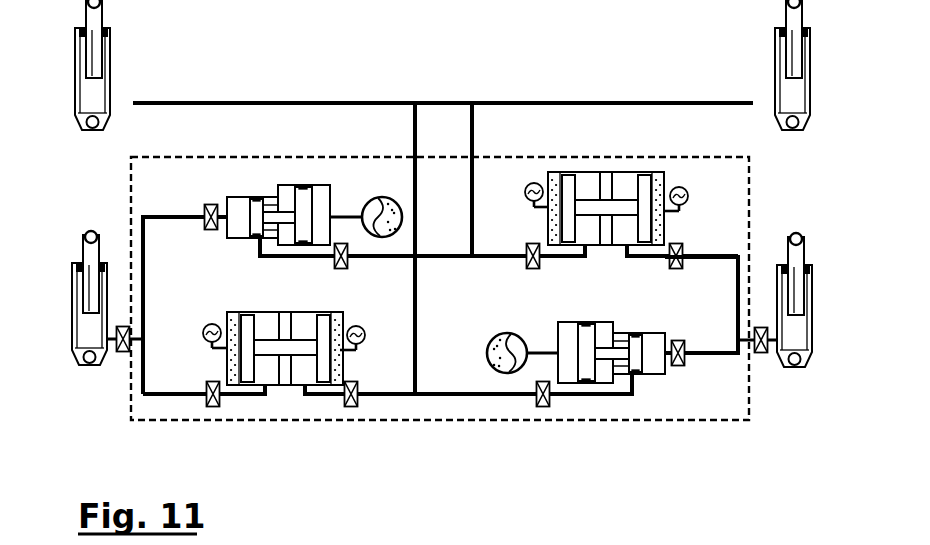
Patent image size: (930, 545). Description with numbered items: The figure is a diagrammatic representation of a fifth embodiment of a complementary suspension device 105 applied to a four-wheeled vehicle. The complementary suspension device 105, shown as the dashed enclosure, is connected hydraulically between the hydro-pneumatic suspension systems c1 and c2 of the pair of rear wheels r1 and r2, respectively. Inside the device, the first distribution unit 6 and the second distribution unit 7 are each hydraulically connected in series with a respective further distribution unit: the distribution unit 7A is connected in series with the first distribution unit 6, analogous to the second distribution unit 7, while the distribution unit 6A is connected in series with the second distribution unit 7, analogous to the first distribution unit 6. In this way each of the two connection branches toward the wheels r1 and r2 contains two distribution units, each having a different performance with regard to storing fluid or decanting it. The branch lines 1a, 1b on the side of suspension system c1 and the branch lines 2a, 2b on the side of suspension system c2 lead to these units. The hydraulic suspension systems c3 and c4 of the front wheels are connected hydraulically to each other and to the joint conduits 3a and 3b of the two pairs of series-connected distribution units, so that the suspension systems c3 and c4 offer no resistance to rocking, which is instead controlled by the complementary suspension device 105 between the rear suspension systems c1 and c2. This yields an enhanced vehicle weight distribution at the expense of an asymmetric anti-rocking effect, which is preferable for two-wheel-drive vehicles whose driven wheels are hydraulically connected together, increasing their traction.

The complementary suspension device 105 is at (387, 423).
The first hydraulic line (lower left) 1a is at (175, 400).
The first hydraulic line (upper left) 1b is at (168, 214).
The second hydraulic line (lower right) 2a is at (710, 358).
The second hydraulic line (upper right) 2b is at (715, 255).
The joint conduit 3a is at (477, 397).
The joint conduit 3b is at (452, 258).
The first distribution unit 6 is at (283, 385).
The distribution unit 6A is at (605, 248).
The second distribution unit 7 is at (233, 239).
The distribution unit 7A is at (655, 378).
The hydro-pneumatic suspension system c1 is at (70, 326).
The hydro-pneumatic suspension system c2 is at (812, 328).
The hydraulic suspension system c3 is at (111, 58).
The hydraulic suspension system c4 is at (775, 65).
The wheel r1 is at (69, 411).
The wheel r2 is at (789, 404).